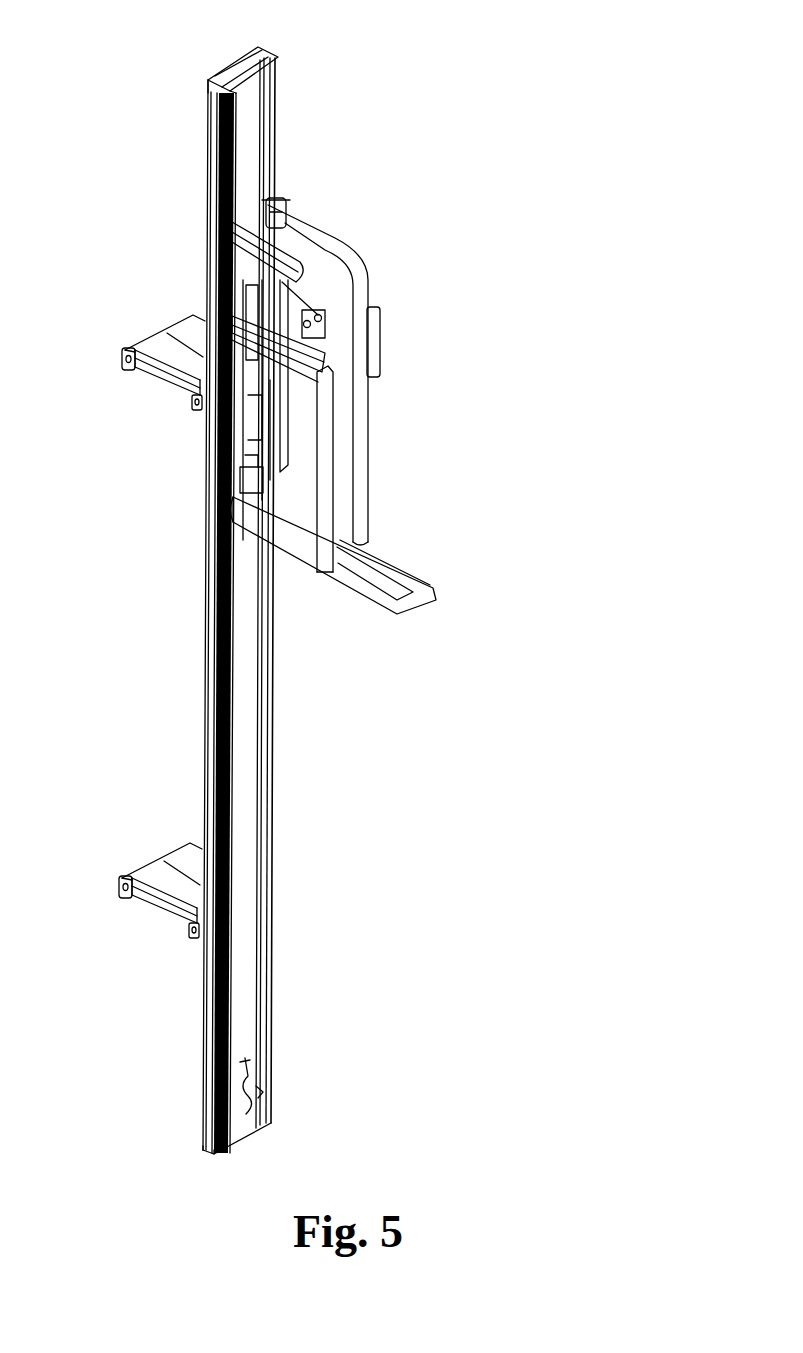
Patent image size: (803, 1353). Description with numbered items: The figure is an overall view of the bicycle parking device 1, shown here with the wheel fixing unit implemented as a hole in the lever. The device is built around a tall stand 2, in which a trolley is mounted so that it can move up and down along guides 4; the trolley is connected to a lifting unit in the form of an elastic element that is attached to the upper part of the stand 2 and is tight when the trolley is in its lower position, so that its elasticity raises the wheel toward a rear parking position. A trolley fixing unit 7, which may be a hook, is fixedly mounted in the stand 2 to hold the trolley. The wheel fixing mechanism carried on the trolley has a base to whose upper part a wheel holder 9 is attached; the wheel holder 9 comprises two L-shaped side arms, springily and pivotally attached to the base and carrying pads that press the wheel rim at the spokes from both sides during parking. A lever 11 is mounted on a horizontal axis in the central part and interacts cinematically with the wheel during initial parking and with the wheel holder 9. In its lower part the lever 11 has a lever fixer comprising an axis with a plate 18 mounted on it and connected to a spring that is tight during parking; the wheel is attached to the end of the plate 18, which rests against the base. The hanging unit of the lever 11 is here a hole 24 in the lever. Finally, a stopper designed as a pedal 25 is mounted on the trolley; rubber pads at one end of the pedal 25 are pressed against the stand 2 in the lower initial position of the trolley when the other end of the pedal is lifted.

The bicycle parking device 1 is at (524, 295).
The stand 2 is at (250, 757).
The guides 4 is at (275, 90).
The trolley fixing unit 7 is at (250, 1082).
The wheel holder 9 is at (255, 320).
The lever 11 is at (260, 427).
The plate 18 is at (257, 460).
The hole 24 is at (280, 472).
The pedal 25 is at (300, 225).